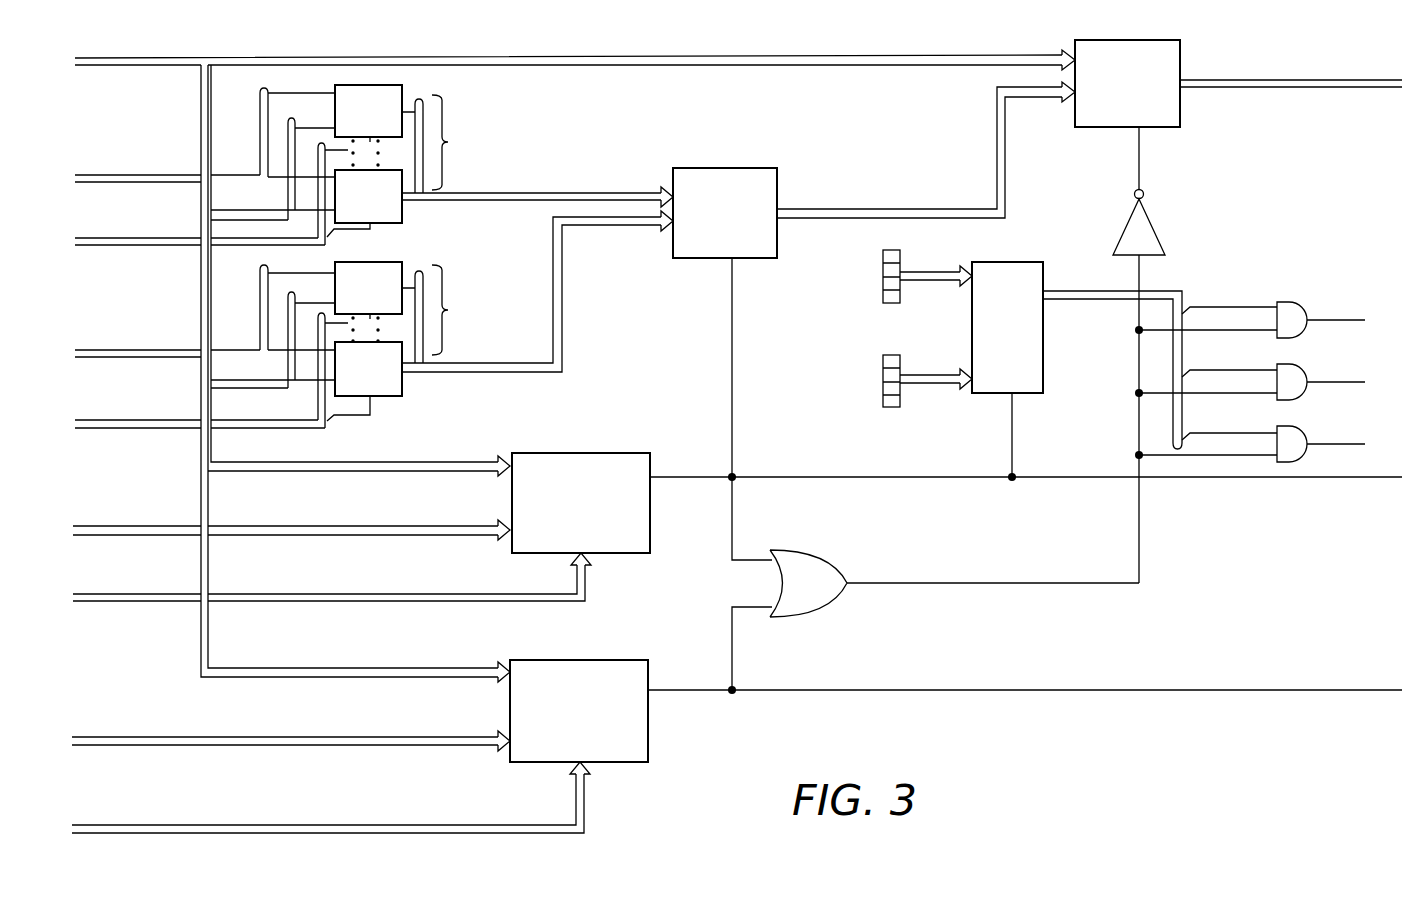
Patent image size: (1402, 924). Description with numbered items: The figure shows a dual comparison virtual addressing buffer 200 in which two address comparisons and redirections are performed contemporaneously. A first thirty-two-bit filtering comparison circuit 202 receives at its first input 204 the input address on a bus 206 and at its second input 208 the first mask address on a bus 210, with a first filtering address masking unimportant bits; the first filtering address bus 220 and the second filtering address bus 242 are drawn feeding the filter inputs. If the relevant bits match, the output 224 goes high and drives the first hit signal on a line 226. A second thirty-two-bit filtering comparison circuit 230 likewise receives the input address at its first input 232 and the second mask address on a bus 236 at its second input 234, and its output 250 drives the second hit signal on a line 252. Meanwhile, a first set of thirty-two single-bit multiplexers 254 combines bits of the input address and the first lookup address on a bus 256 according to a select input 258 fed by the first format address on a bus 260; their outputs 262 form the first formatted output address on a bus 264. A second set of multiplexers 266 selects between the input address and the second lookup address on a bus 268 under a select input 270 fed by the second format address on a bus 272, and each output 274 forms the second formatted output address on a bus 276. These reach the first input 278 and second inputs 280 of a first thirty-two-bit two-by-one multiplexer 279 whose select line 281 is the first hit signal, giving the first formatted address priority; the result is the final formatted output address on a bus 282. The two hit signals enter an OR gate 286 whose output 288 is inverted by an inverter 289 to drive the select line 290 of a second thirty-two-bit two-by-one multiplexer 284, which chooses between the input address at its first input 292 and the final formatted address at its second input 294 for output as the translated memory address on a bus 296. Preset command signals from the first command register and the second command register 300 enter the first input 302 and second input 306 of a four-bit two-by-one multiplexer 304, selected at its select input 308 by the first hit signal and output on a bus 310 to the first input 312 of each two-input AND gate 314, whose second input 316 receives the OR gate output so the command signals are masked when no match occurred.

The dual comparison virtual addressing buffer 200 is at (629, 42).
The first 32-bit filtering comparison circuit 202 is at (600, 453).
The I1 input 204 is at (510, 462).
The bus 206 is at (178, 66).
The I0 input 208 is at (510, 523).
The bus 210 is at (187, 527).
The filter bus FI0[31-0] 220 is at (183, 595).
The output 224 is at (653, 480).
The line 226 is at (705, 473).
The second 32-bit filtering comparison circuit 230 is at (563, 660).
The I1 input 232 is at (508, 667).
The I0 input 234 is at (508, 735).
The bus 236 is at (193, 735).
The filter bus FI1[31-0] 242 is at (197, 826).
The output 250 is at (652, 694).
The line 252 is at (718, 685).
The first set of thirty-two single-bit multiplexers 254 is at (448, 142).
The bus 256 is at (185, 175).
The select input 258 is at (372, 229).
The bus 260 is at (185, 238).
The outputs 262 is at (413, 196).
The bus 264 is at (580, 196).
The second set of thirty-two single-bit multiplexers 266 is at (448, 310).
The bus 268 is at (185, 350).
The select input 270 is at (385, 416).
The bus 272 is at (185, 420).
The output 274 is at (405, 366).
The bus 276 is at (556, 219).
The I1 input 278 is at (672, 190).
The first 32-bit 2×1 multiplexer 279 is at (710, 168).
The I0 inputs 280 is at (670, 226).
The select line 281 is at (730, 260).
The bus 282 is at (940, 209).
The second 32-bit 2×1 multiplexer 284 is at (1180, 117).
The OR gate 286 is at (813, 570).
The output 288 is at (847, 583).
The inverter 289 is at (1140, 218).
The select line 290 is at (1142, 143).
The I1 input 292 is at (1074, 57).
The I0 input 294 is at (1073, 108).
The bus 296 is at (1398, 90).
The second command register CMD1 300 is at (892, 355).
The I1 input 302 is at (970, 272).
The 4-bit 2×1 multiplexer 304 is at (993, 262).
The I0 input 306 is at (970, 384).
The select input 308 is at (1013, 425).
The bus 310 is at (1050, 290).
The first input 312 is at (1275, 303).
The two-input AND gate 314 is at (1298, 302).
The second input 316 is at (1276, 329).